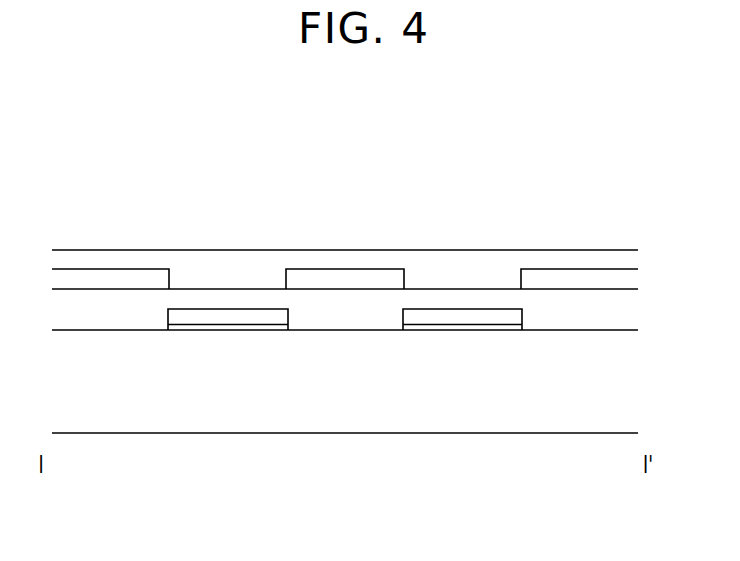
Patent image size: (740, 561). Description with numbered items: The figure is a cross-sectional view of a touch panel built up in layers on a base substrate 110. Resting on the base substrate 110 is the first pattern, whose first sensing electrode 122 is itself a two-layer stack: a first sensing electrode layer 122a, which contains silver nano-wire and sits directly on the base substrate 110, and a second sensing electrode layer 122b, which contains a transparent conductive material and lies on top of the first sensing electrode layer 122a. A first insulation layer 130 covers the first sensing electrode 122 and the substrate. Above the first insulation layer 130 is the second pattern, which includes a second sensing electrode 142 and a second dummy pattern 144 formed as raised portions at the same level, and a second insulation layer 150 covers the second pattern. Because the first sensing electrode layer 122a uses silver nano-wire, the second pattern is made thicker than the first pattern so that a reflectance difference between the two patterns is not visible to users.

The base substrate 110 is at (633, 383).
The first sensing electrode 122 is at (345, 425).
The first sensing electrode layer 122a is at (250, 326).
The second sensing electrode layer 122b is at (185, 326).
The first insulation layer 130 is at (633, 308).
The second sensing electrode 142 is at (583, 277).
The second dummy pattern 144 is at (120, 278).
The second insulation layer 150 is at (636, 258).